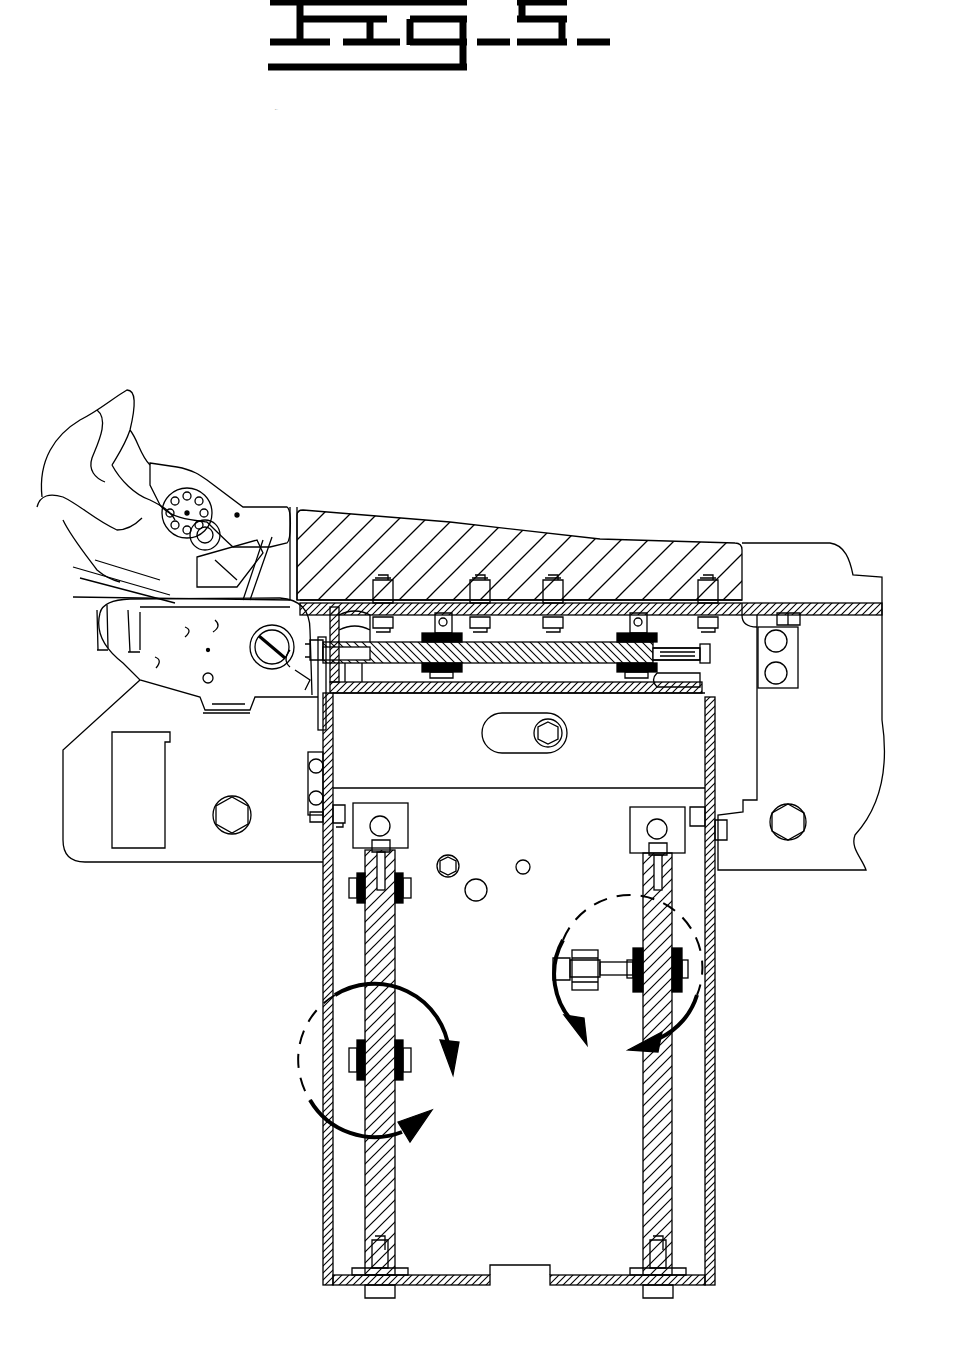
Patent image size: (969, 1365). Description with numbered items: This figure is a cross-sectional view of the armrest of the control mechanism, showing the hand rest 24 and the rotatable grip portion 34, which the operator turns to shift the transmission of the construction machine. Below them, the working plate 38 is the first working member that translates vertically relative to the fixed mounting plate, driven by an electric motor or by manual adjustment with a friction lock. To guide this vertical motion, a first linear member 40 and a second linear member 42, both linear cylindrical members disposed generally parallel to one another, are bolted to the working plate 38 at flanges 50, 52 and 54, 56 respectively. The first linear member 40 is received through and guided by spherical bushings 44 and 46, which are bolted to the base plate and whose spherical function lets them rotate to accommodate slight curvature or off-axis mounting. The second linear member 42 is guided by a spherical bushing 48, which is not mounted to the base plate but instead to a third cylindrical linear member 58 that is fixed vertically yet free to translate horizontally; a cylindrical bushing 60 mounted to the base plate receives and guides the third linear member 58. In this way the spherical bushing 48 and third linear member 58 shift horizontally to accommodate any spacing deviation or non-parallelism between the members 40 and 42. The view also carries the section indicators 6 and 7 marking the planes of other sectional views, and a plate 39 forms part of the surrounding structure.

The hand rest 24 is at (125, 392).
The grip portion 34 is at (150, 472).
The working plate 38 is at (548, 1109).
The mounting plate 39 is at (740, 728).
The first linear member 40 is at (393, 1147).
The second linear member 42 is at (640, 1171).
The spherical bushing 44 is at (410, 888).
The spherical bushing 46 is at (415, 1050).
The spherical bushing 48 is at (625, 948).
The flange 50 is at (408, 832).
The flange 54 is at (625, 840).
The flange 52 is at (393, 1265).
The flange 56 is at (633, 1262).
The third cylindrical linear member 58 is at (553, 962).
The cylindrical bushing 60 is at (578, 925).
The section view indicator 6 is at (640, 1047).
The section view indicator 7 is at (378, 1063).